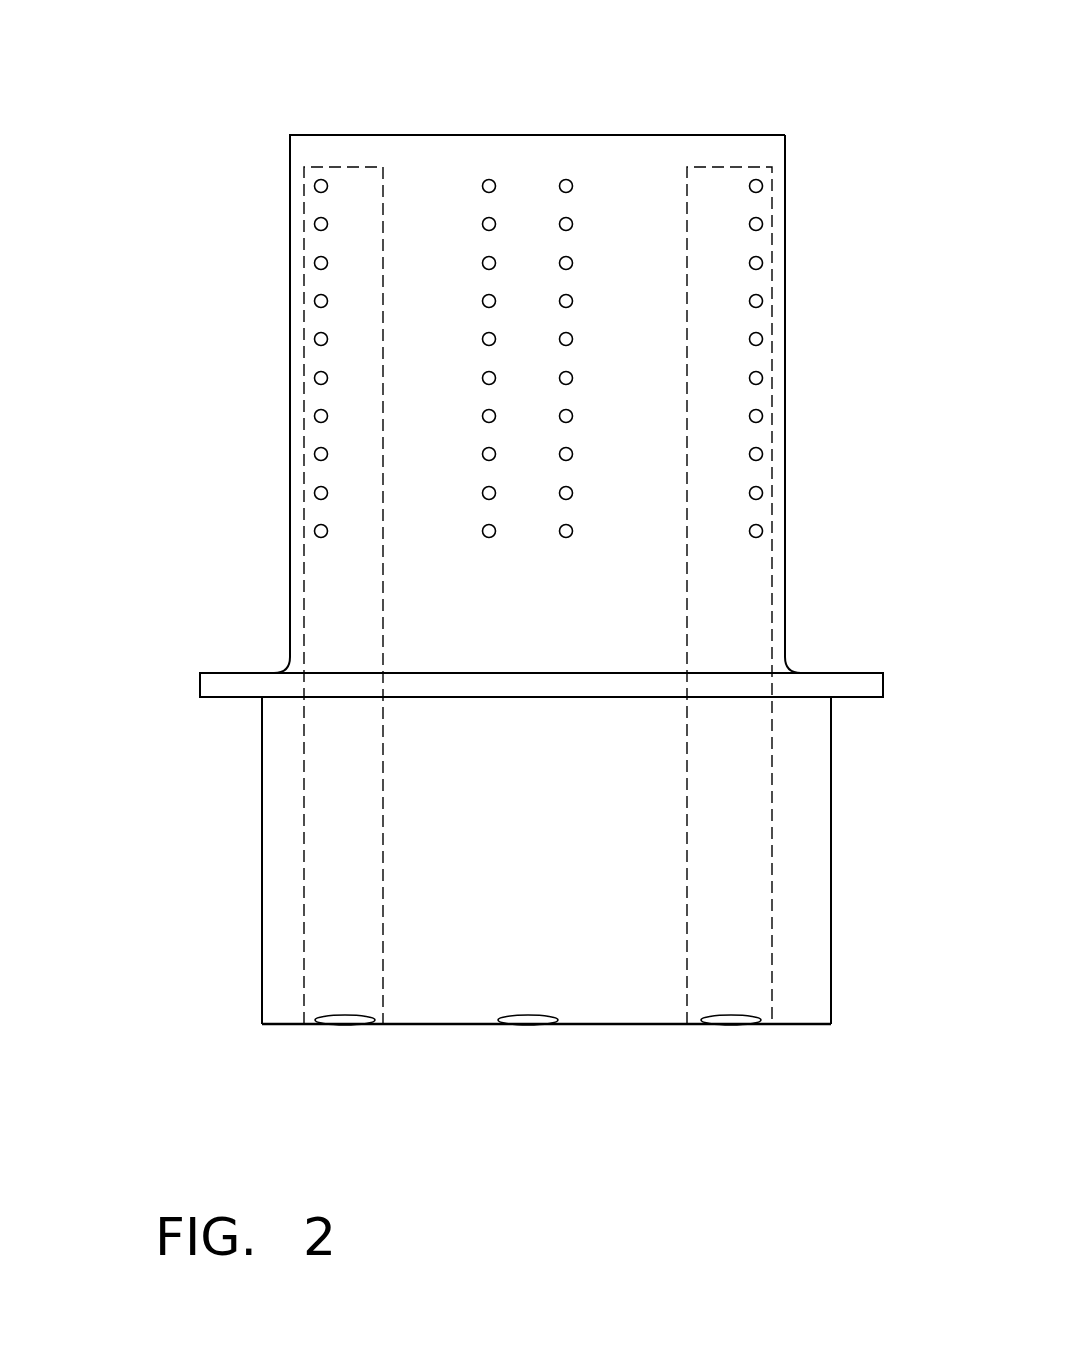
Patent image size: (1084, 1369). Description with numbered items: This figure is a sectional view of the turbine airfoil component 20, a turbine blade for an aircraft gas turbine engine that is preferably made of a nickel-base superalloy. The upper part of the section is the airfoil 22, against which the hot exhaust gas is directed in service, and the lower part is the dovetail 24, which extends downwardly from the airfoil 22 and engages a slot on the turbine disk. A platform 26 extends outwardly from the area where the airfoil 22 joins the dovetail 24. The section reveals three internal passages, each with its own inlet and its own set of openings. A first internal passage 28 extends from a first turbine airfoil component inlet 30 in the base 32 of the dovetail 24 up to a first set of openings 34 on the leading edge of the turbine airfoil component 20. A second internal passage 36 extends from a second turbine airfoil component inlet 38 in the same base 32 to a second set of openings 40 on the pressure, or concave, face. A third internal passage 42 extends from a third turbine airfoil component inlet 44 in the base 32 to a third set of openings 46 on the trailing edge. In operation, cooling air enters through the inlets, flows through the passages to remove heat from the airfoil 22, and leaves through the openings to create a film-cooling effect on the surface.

The turbine airfoil component 20 is at (257, 66).
The airfoil 22 is at (428, 330).
The dovetail 24 is at (831, 870).
The platform 26 is at (207, 672).
The first internal passage 28 is at (747, 439).
The first turbine airfoil component inlet 30 is at (735, 1047).
The base 32 is at (466, 990).
The first set of openings 34 is at (758, 263).
The second internal passage 36 is at (603, 607).
The second turbine airfoil component inlet 38 is at (533, 1045).
The second set of openings 40 is at (566, 222).
The third internal passage 42 is at (340, 600).
The third turbine airfoil component inlet 44 is at (335, 1048).
The third set of openings 46 is at (315, 224).